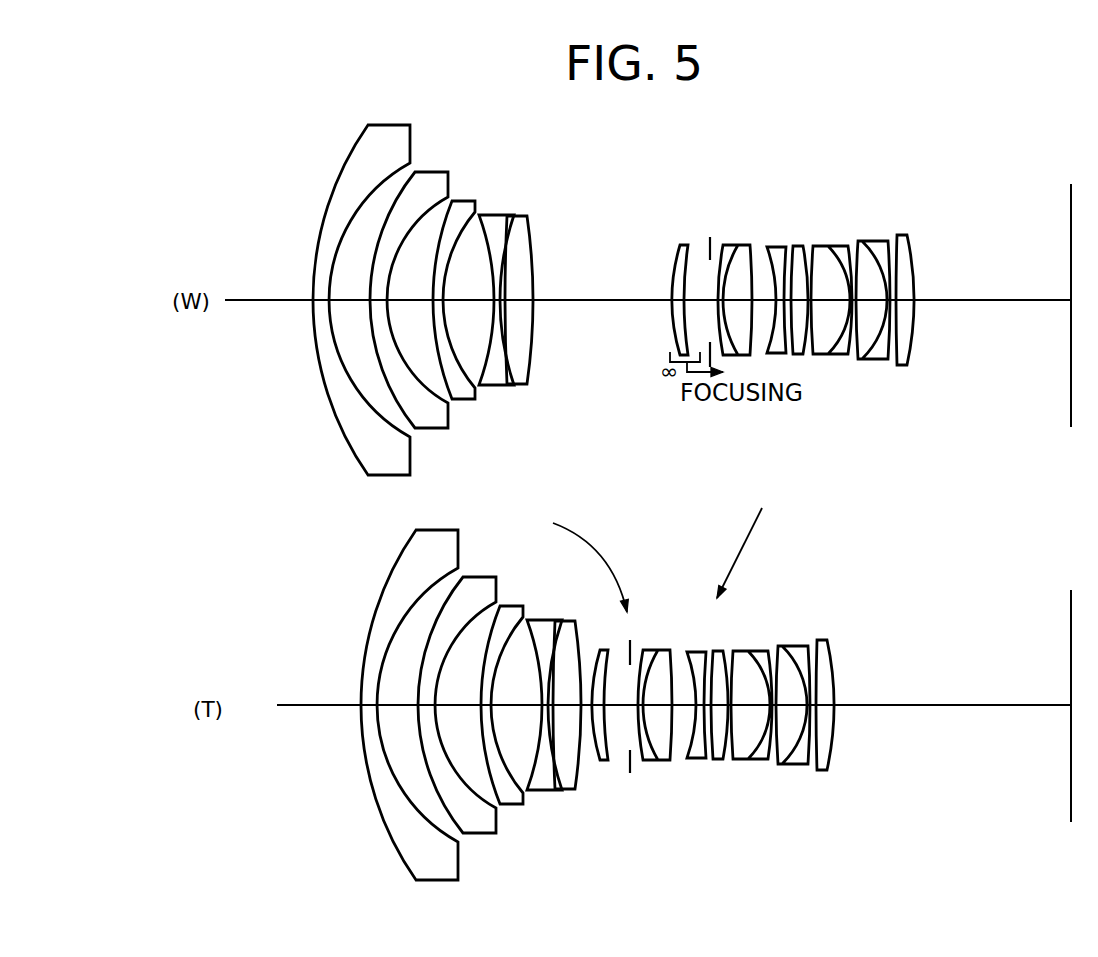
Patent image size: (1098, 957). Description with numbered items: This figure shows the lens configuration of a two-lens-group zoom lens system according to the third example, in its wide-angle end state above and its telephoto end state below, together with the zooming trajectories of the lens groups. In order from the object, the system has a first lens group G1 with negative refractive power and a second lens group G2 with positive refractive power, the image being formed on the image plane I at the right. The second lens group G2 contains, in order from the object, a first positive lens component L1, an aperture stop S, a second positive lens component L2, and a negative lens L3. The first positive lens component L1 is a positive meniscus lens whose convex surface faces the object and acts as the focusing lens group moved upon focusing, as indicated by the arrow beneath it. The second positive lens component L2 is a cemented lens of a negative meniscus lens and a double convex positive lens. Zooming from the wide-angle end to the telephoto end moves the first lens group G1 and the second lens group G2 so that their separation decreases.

The first lens group G1 is at (550, 477).
The second lens group G2 is at (753, 469).
The first positive lens component L1 is at (690, 244).
The second positive lens component L2 is at (753, 238).
The negative lens L3 is at (783, 246).
The aperture stop S is at (703, 240).
The image plane I is at (1071, 213).